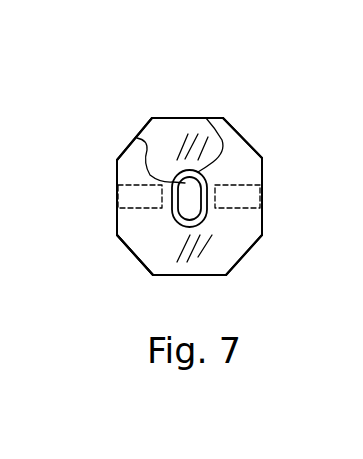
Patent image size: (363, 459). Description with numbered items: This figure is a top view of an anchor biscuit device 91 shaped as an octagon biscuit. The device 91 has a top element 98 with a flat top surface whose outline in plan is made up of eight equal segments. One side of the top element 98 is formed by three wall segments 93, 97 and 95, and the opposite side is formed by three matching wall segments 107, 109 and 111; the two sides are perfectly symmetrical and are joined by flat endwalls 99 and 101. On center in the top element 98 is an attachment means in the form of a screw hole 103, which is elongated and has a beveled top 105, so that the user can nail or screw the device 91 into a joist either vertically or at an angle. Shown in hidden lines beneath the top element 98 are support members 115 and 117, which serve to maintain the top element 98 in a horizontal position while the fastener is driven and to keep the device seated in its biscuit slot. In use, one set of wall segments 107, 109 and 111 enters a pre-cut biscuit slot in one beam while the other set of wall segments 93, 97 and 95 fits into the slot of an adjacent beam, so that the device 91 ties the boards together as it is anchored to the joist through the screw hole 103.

The anchor biscuit device 91 is at (278, 100).
The wall segment 93 is at (250, 248).
The wall segment 95 is at (125, 245).
The wall segment 97 is at (210, 275).
The top element 98 is at (148, 256).
The flat endwall 99 is at (262, 170).
The flat endwall 101 is at (117, 175).
The screw hole 103 is at (137, 138).
The beveled top 105 is at (206, 118).
The wall segment 107 is at (245, 141).
The wall segment 109 is at (173, 118).
The wall segment 111 is at (138, 138).
The support member 115 is at (130, 205).
The support member 117 is at (248, 202).